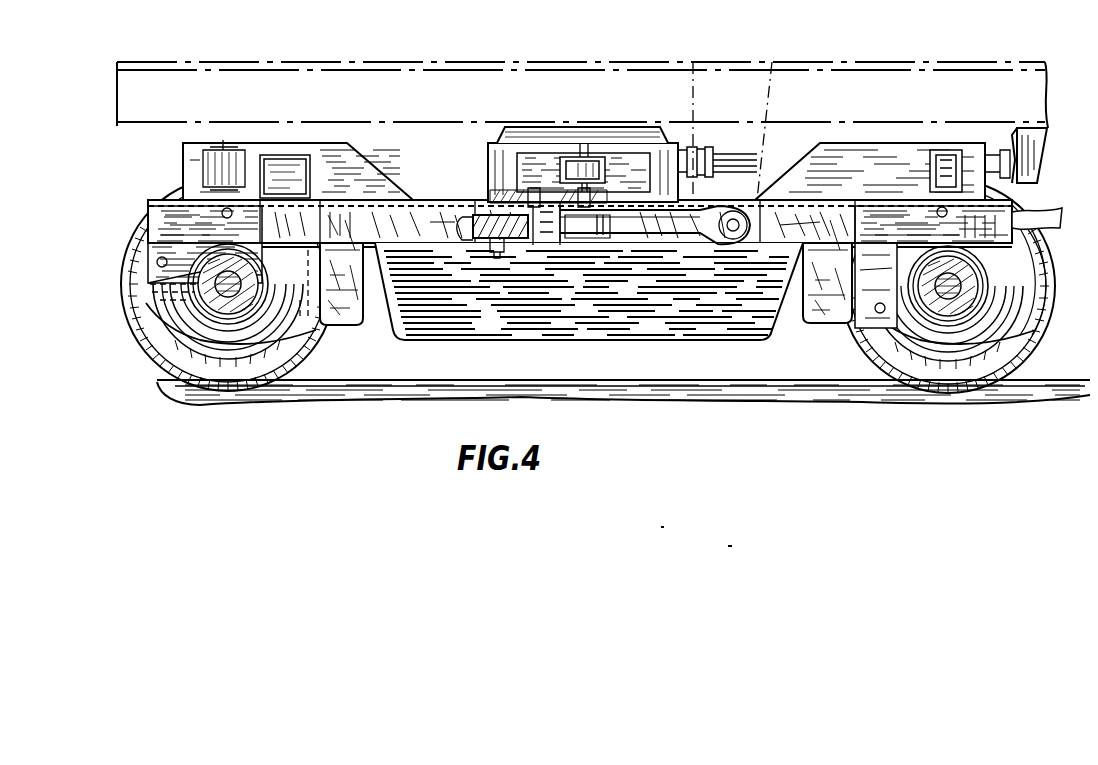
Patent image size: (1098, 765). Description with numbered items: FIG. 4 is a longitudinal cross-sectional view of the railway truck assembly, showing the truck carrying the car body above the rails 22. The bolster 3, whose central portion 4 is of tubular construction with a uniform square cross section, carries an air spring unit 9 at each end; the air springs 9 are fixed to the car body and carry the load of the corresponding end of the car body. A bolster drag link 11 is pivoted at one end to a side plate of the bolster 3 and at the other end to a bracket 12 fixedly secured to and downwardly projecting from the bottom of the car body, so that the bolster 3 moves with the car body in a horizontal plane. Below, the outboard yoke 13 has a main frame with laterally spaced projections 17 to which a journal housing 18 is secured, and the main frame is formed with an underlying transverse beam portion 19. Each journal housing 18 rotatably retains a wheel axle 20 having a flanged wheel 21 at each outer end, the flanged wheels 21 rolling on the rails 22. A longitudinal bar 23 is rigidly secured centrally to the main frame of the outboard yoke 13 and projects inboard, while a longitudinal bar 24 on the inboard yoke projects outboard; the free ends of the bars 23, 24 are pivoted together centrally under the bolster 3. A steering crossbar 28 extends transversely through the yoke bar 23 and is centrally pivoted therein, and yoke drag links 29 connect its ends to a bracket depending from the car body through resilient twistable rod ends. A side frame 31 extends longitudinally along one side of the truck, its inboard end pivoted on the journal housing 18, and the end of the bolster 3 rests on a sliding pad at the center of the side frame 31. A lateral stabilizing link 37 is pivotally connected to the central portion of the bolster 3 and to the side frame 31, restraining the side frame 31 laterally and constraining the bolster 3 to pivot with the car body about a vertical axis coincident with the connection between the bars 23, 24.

The bolster 3 is at (490, 160).
The central portion 4 is at (552, 140).
The air spring unit 9 is at (628, 120).
The bolster drag link 11 is at (770, 163).
The bracket 12 is at (1038, 160).
The outboard yoke 13 is at (205, 292).
The projection 17 is at (318, 345).
The journal housing 18 is at (975, 290).
The transverse beam portion 19 is at (360, 325).
The wheel axle 20 is at (200, 330).
The flanged wheel 21 is at (168, 358).
The rail 22 is at (610, 403).
The longitudinal bar 23 is at (437, 204).
The longitudinal bar 24 is at (625, 248).
The steering crossbar 28 is at (478, 244).
The yoke drag link 29 is at (600, 232).
The side frame 31 is at (545, 333).
The lateral stabilizing link 37 is at (575, 143).